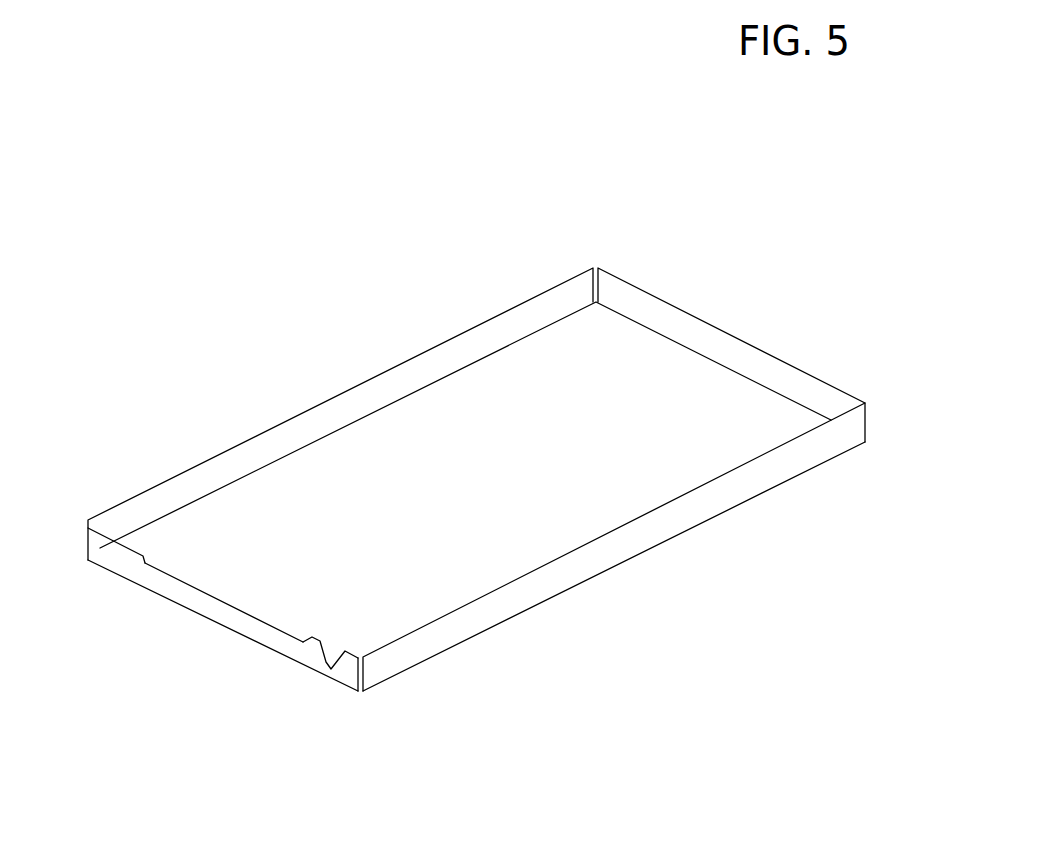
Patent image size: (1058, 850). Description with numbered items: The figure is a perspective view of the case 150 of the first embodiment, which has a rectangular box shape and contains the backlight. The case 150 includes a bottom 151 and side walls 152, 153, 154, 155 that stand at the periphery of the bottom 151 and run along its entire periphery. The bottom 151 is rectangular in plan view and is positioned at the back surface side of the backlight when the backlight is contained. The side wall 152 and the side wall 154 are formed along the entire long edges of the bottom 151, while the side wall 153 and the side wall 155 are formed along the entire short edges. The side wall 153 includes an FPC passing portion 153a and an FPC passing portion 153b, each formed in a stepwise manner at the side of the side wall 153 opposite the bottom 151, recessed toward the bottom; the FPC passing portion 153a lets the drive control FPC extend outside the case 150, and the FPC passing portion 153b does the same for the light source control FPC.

The case 150 is at (497, 192).
The bottom 151 is at (597, 328).
The side wall 152 is at (265, 428).
The side wall 153 is at (118, 560).
The FPC passing portion 153a is at (220, 600).
The FPC passing portion 153b is at (328, 667).
The side wall 154 is at (612, 552).
The side wall 155 is at (745, 345).